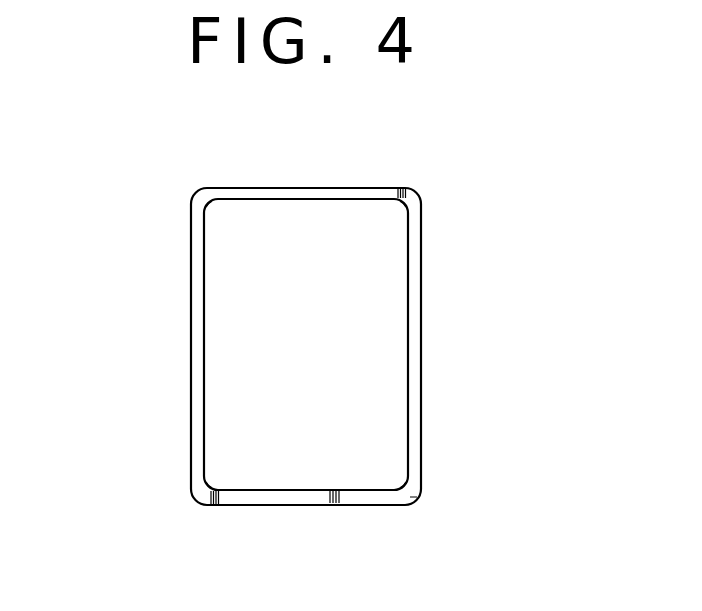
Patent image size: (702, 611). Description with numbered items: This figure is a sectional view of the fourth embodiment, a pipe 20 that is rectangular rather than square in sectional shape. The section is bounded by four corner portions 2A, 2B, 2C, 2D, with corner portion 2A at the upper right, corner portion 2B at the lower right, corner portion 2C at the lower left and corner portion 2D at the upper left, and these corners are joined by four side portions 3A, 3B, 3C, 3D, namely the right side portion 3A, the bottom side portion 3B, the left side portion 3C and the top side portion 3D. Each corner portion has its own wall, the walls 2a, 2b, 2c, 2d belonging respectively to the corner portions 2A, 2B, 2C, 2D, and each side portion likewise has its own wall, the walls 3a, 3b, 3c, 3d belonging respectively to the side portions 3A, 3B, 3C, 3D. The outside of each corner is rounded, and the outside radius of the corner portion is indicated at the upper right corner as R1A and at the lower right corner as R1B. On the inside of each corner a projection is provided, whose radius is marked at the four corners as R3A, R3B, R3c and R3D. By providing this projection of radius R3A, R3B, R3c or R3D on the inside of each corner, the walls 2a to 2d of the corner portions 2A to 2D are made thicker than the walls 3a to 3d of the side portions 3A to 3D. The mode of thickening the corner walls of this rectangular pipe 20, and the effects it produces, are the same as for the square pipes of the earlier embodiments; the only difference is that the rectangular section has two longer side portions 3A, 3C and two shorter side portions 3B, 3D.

The pipe 20 is at (512, 337).
The corner portion 2A is at (445, 192).
The corner portion 2B is at (427, 520).
The corner portion 2C is at (190, 519).
The corner portion 2D is at (176, 185).
The wall of corner portion 2a is at (407, 207).
The wall of corner portion 2b is at (403, 490).
The wall of corner portion 2c is at (196, 487).
The wall of corner portion 2d is at (207, 200).
The side portion 3A is at (421, 397).
The side portion 3B is at (325, 506).
The side portion 3C is at (191, 398).
The side portion 3D is at (297, 188).
The wall of side portion 3a is at (408, 328).
The wall of side portion 3b is at (262, 496).
The wall of side portion 3c is at (192, 332).
The wall of side portion 3d is at (370, 189).
The outside radius of corner portion R1A is at (407, 190).
The outside radius of corner portion R1B is at (418, 498).
The radius of projection R3A is at (394, 207).
The radius of projection R3B is at (399, 478).
The radius of projection R3c is at (215, 479).
The radius of projection R3D is at (212, 208).